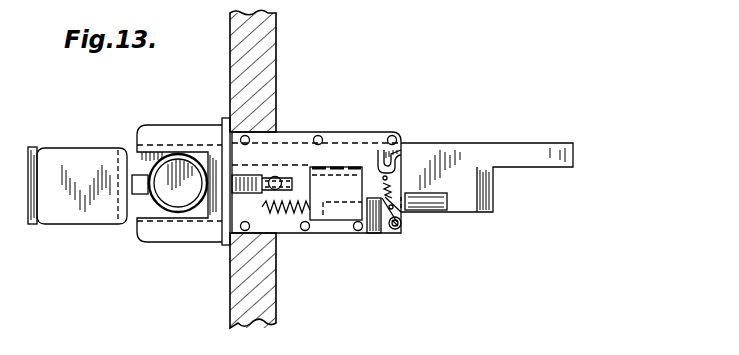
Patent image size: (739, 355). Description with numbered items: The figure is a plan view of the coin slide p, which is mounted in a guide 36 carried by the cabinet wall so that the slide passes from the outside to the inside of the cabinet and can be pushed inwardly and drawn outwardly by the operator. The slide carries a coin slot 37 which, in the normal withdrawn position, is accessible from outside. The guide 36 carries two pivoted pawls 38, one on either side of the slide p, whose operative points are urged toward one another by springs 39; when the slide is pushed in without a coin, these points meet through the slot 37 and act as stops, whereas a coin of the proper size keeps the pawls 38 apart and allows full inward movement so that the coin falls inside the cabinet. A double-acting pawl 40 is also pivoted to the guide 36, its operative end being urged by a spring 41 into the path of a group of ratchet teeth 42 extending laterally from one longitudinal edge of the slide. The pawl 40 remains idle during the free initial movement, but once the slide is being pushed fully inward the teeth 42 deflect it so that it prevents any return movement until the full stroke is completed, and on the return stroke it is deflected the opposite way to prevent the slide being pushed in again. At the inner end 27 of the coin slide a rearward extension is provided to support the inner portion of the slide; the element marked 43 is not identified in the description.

The coin slide p is at (75, 152).
The inner end of the coin slide 27 is at (497, 196).
The guide 36 is at (342, 134).
The coin slot 37 is at (165, 202).
The pivoted pawls 38 is at (259, 176).
The springs 39 is at (278, 178).
The double-acting pawl 40 is at (400, 226).
The spring 41 is at (382, 197).
The ratchet teeth 42 is at (288, 212).
The pad 43 is at (430, 206).